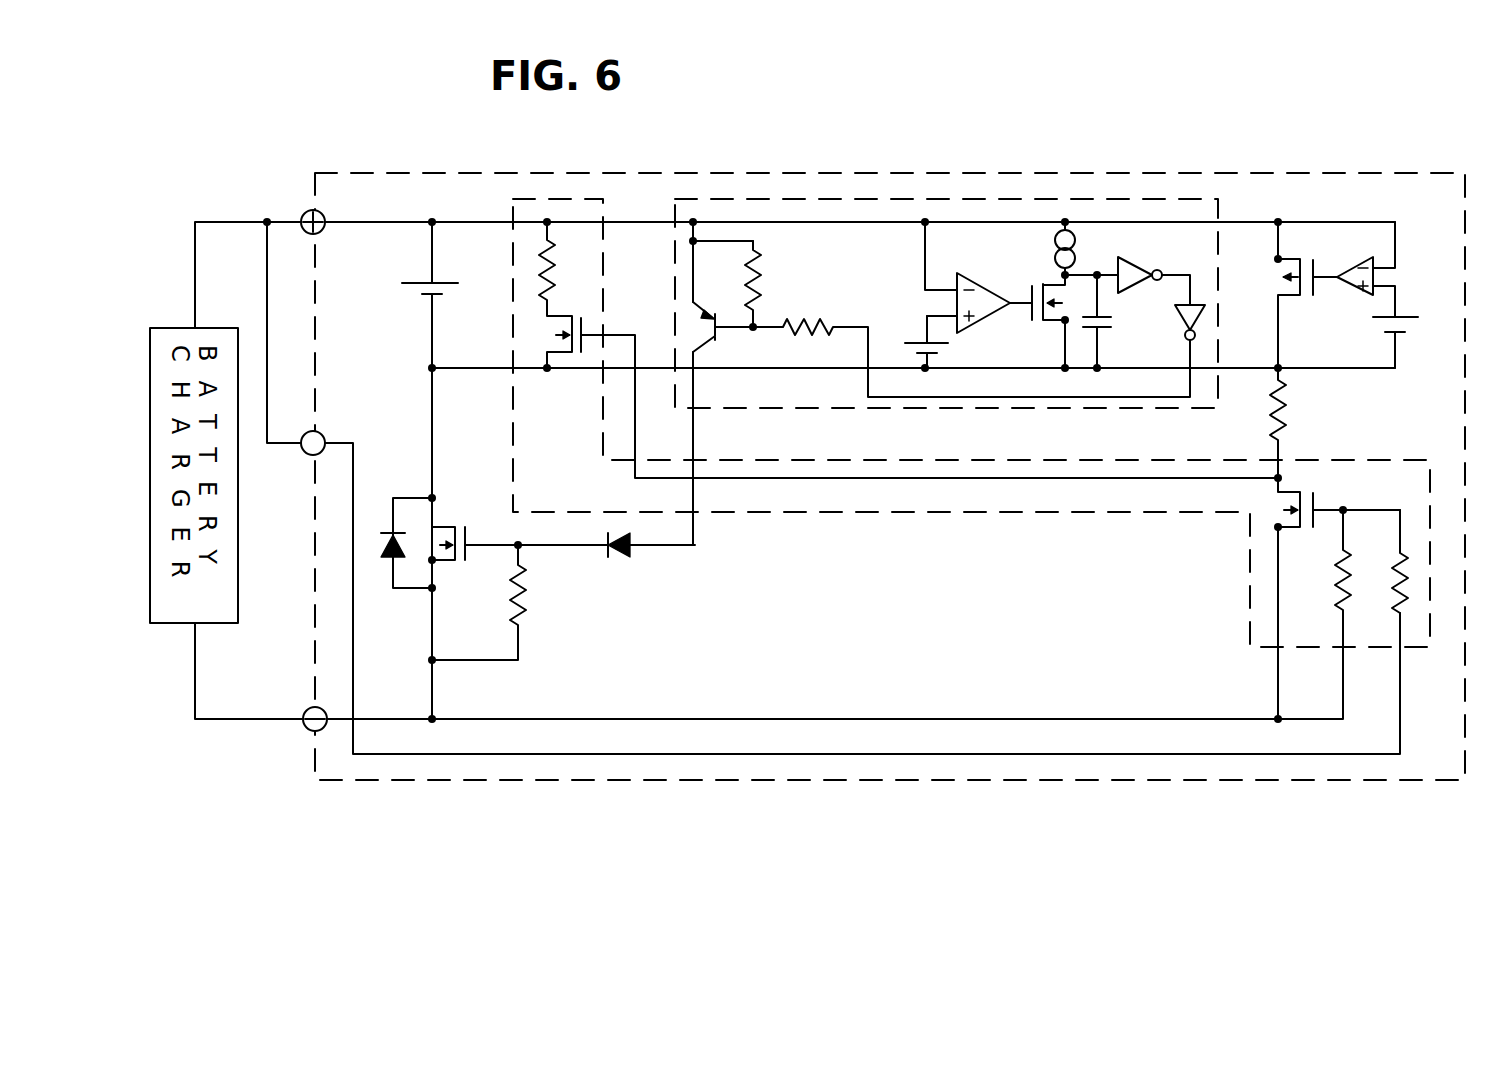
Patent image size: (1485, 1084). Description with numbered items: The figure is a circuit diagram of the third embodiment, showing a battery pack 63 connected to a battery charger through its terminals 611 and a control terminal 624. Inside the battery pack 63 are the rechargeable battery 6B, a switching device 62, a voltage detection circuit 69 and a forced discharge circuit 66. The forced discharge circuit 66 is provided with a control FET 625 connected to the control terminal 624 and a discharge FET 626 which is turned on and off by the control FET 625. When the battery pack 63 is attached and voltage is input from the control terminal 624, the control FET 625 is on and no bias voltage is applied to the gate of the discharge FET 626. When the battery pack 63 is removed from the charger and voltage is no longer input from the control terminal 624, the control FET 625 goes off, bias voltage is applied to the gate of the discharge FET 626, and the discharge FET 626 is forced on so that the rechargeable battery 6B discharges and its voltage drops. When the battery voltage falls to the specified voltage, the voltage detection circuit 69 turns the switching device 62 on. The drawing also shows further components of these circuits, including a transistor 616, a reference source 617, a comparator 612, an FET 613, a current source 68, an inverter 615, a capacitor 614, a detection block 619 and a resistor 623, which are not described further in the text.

The battery pack 63 is at (527, 780).
The terminals 611 is at (306, 212).
The control terminal 624 is at (320, 432).
The rechargeable battery 6B is at (405, 267).
The switching device 62 is at (448, 520).
The forced discharge circuit 66 is at (518, 199).
The discharge FET 626 is at (560, 315).
The transistor 616 is at (708, 327).
The voltage detection circuit 69 is at (870, 199).
The reference voltage source 617 is at (902, 340).
The comparator 612 is at (980, 278).
The transistor 613 is at (1046, 322).
The constant current source 68 is at (1062, 228).
The inverter 615 is at (1192, 270).
The capacitor 614 is at (1112, 328).
The overdischarge detection circuit 619 is at (1335, 208).
The resistor 623 is at (1292, 398).
The control FET 625 is at (1278, 527).